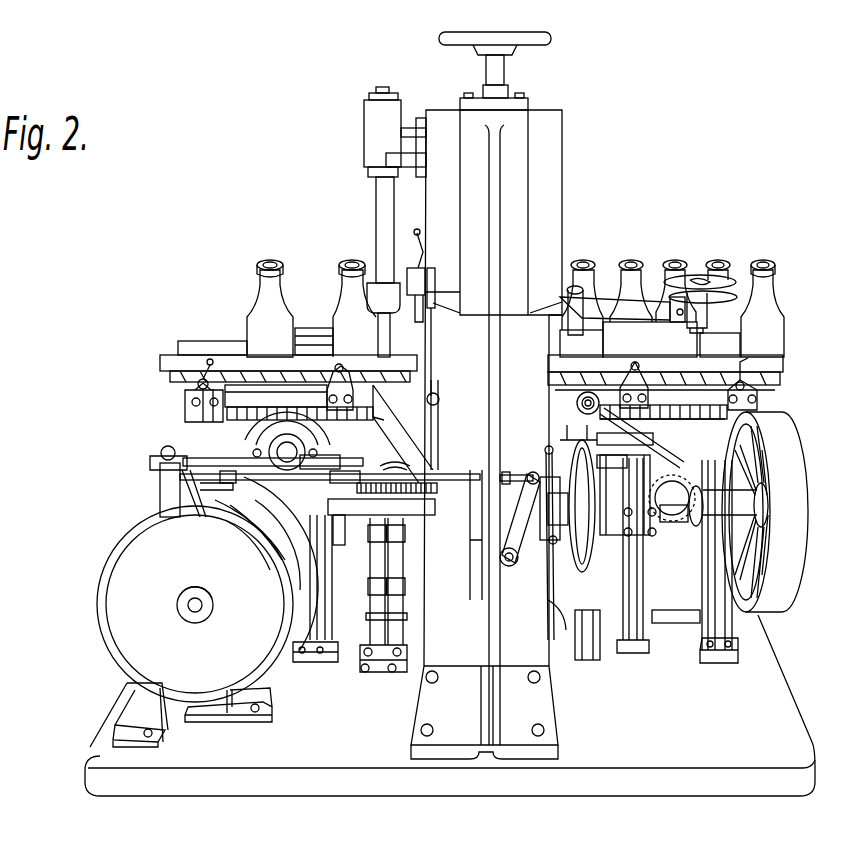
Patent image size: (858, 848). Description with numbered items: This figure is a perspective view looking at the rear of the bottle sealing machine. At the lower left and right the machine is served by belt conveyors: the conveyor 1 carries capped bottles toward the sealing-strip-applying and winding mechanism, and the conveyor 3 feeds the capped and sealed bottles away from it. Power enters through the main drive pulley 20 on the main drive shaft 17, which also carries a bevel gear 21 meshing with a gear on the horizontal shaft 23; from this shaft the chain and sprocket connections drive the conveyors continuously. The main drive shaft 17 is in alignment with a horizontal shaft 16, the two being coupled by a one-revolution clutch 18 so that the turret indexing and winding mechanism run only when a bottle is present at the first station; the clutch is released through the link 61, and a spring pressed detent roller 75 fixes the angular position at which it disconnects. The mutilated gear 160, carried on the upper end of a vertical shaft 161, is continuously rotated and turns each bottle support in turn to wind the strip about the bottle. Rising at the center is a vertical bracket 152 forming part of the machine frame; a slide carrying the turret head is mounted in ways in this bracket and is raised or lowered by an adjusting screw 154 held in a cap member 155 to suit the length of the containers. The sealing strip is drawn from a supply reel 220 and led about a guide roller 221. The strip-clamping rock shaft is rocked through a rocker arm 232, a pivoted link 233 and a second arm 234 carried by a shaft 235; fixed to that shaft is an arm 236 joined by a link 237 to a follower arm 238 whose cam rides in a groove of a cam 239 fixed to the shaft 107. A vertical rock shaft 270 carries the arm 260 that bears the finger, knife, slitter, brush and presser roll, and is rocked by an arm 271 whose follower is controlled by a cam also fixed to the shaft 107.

The belt conveyor 1 is at (703, 418).
The belt conveyor 3 is at (250, 427).
The horizontal shaft 16 is at (357, 508).
The main drive shaft 17 is at (690, 556).
The one-revolution clutch mechanism 18 is at (605, 609).
The main drive pulley 20 is at (789, 483).
The bevel gear 21 is at (708, 513).
The horizontal shaft 23 is at (684, 496).
The link 61 is at (644, 470).
The spring pressed detent roller 75 is at (566, 616).
The shaft 107 is at (187, 607).
The vertical bracket 152 is at (514, 162).
The adjusting screw 154 is at (490, 71).
The cap member 155 is at (529, 105).
The mutilated gear 160 is at (397, 453).
The vertical shaft 161 is at (433, 472).
The supply reel 220 is at (722, 264).
The guide roller 221 is at (592, 280).
The rocker arm 232 is at (422, 270).
The pivoted link 233 is at (434, 292).
The second arm 234 is at (474, 538).
The shaft 235 is at (512, 566).
The arm 236 is at (529, 516).
The link 237 is at (513, 479).
The follower arm 238 is at (187, 496).
The cam 239 is at (253, 493).
The arm 260 is at (383, 298).
The vertical rock shaft 270 is at (380, 188).
The arm 271 is at (403, 431).